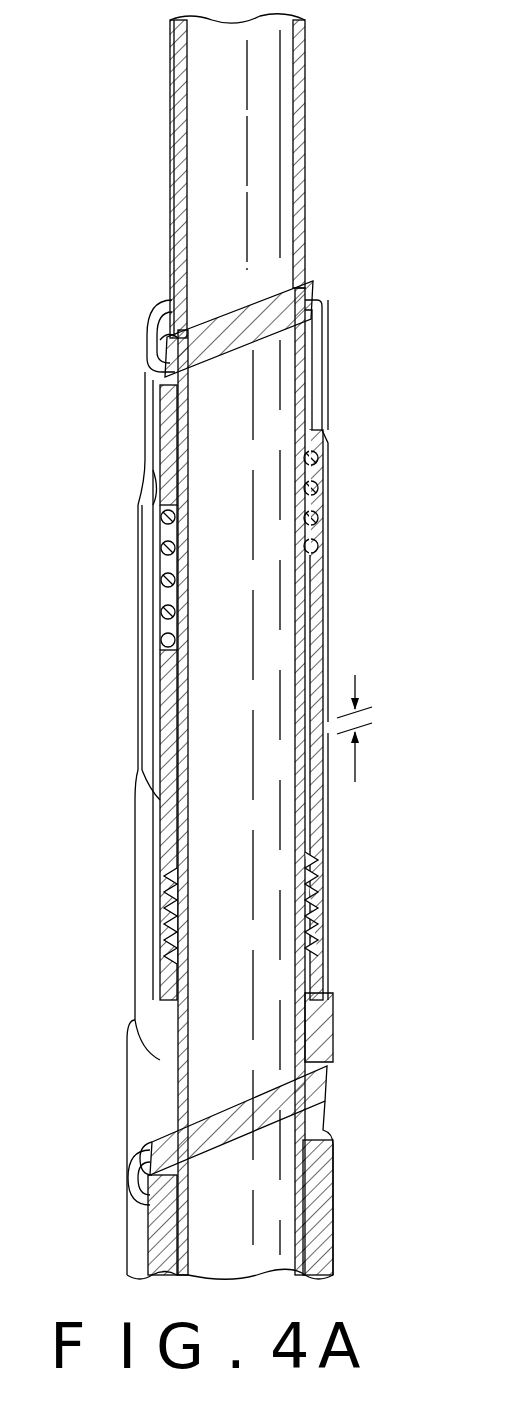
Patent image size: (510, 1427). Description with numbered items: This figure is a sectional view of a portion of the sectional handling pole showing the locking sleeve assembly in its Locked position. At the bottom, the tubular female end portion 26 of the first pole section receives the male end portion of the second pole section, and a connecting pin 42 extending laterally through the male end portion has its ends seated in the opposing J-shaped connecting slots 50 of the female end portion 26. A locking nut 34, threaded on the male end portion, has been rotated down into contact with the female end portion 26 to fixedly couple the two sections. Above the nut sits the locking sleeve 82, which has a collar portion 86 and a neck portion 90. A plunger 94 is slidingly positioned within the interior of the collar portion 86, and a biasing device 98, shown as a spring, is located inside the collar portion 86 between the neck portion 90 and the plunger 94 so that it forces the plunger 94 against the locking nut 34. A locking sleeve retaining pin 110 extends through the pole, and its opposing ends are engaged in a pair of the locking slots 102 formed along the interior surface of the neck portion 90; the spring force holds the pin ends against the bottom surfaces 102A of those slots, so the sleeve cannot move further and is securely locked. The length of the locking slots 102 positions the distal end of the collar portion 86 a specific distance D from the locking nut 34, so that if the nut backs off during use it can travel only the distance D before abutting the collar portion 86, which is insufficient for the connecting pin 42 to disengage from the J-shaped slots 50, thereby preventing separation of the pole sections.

The locking sleeve retaining pin 110 is at (313, 288).
The locking slots 102 is at (150, 343).
The bottom surfaces of the locking slots 102A is at (165, 385).
The neck portion 90 is at (150, 416).
The biasing device 98 is at (160, 530).
The collar portion 86 is at (150, 668).
The locking sleeve 82 is at (332, 537).
The plunger 94 is at (315, 640).
The distance D is at (354, 748).
The locking nut 34 is at (140, 888).
The connecting pin 42 is at (325, 1080).
The J-shaped connecting slots 50 is at (110, 1171).
The tubular female end portion 26 is at (325, 1198).